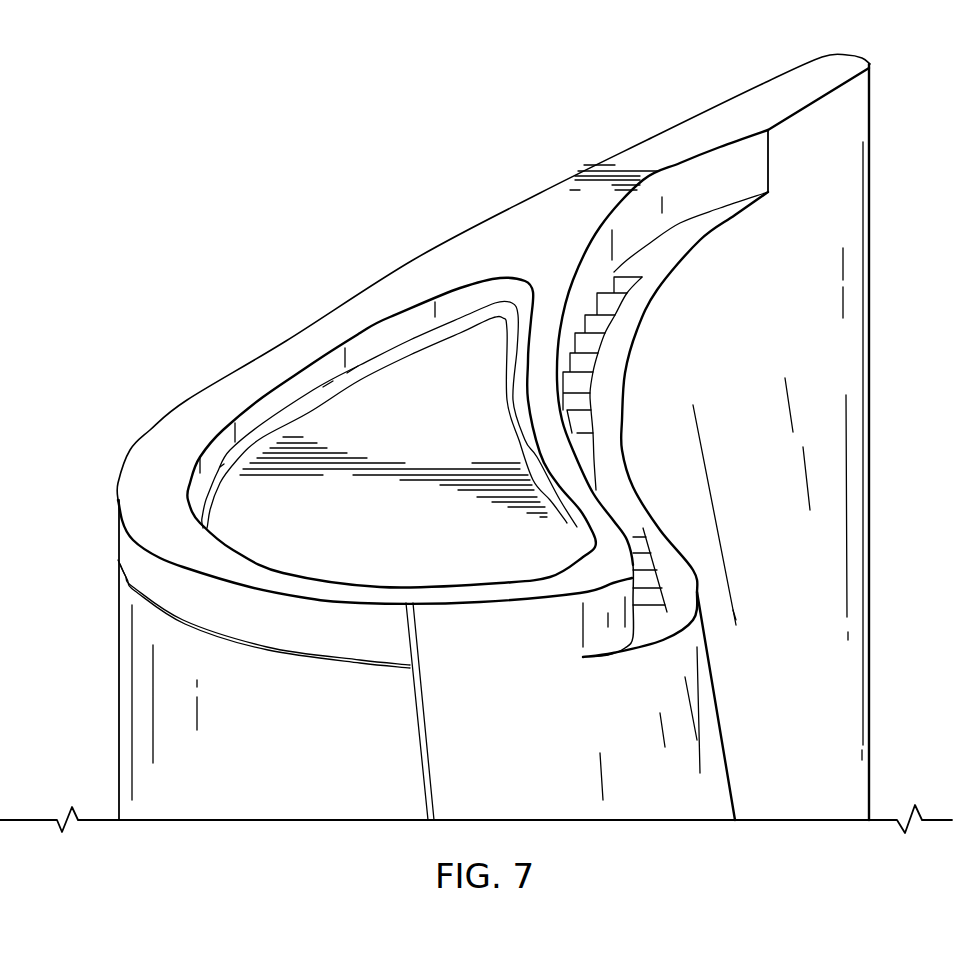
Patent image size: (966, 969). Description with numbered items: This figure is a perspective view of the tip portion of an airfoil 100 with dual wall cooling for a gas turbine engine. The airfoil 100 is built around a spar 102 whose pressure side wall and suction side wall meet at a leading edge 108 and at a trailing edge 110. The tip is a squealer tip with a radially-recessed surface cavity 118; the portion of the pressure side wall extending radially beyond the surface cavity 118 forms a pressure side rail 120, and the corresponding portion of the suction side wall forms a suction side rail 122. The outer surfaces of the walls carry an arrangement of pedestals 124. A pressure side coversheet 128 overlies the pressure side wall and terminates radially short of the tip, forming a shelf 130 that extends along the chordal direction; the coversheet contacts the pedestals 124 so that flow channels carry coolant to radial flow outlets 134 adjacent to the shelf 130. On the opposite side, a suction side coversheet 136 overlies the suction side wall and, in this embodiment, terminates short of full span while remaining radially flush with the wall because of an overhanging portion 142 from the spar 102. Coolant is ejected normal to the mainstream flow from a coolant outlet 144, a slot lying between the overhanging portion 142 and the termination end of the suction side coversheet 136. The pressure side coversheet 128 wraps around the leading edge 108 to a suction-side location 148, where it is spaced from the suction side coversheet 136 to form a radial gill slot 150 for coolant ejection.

The airfoil 100 is at (146, 140).
The spar 102 is at (520, 258).
The leading edge 108 is at (752, 781).
The trailing edge 110 is at (900, 60).
The surface cavity 118 is at (352, 428).
The pressure side rail 120 is at (612, 517).
The suction side rail 122 is at (152, 458).
The pedestals 124 is at (610, 303).
The pressure side coversheet 128 is at (833, 203).
The shelf 130 is at (673, 257).
The radial flow outlets 134 is at (583, 360).
The suction side coversheet 136 is at (117, 700).
The overhanging portion 142 is at (128, 547).
The coolant outlet 144 is at (263, 653).
The suction-side location 148 is at (413, 710).
The radial gill slot 150 is at (423, 711).